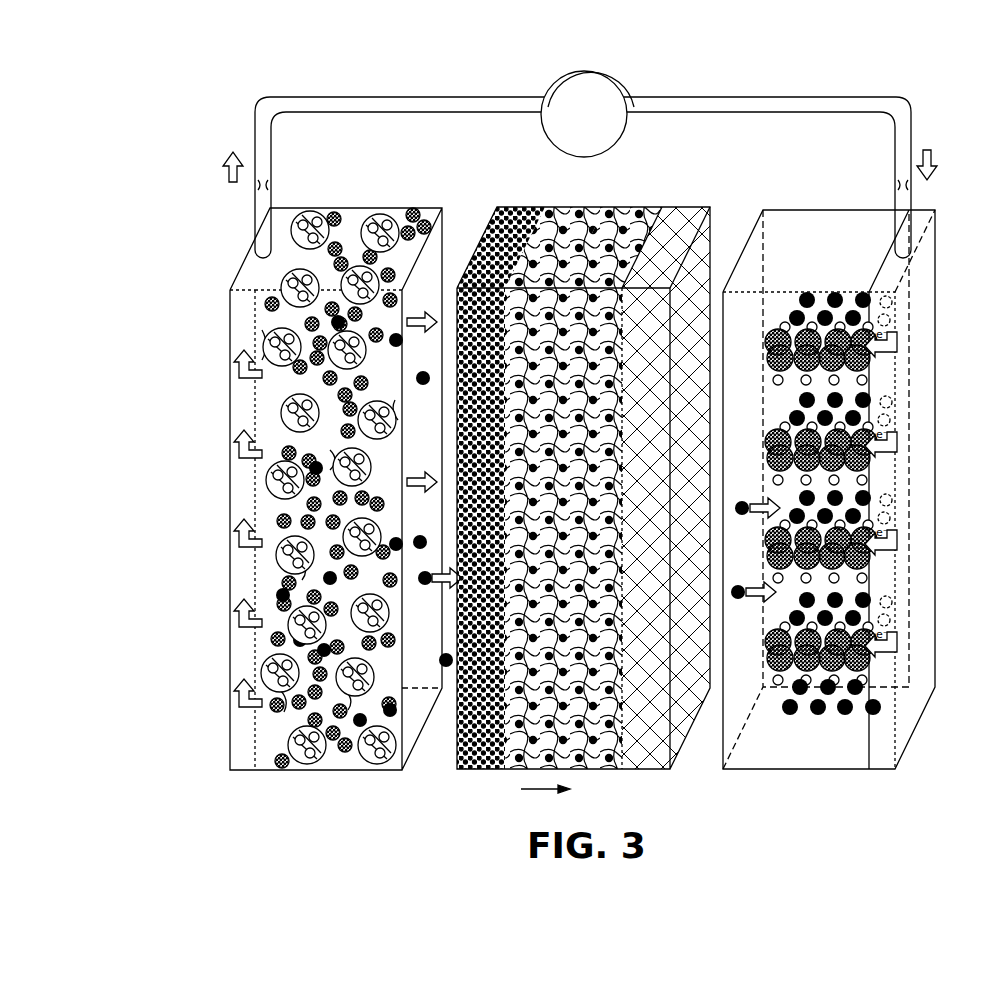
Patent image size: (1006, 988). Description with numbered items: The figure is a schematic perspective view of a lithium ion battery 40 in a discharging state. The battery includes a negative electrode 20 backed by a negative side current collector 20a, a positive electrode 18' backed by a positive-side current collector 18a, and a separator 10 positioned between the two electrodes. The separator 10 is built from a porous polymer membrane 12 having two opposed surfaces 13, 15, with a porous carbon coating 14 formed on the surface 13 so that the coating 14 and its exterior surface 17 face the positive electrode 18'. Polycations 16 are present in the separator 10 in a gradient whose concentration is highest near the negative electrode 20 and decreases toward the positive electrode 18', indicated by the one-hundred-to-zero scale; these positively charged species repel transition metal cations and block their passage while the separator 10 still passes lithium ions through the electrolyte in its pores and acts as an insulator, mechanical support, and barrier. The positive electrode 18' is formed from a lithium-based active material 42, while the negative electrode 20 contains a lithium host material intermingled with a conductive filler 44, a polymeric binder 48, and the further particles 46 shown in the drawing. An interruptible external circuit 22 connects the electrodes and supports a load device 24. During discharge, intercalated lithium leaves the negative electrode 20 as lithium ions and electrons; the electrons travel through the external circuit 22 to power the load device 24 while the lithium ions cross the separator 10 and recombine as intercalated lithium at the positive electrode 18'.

The lithium ion battery 40 is at (610, 130).
The external circuit 22 is at (457, 97).
The load device 24 is at (591, 55).
The negative electrode 20 is at (296, 507).
The negative side current collector 20a is at (243, 728).
The separator 10 is at (600, 465).
The surface of porous polymer membrane 15 is at (458, 250).
The polycation 16 is at (576, 218).
The porous polymer membrane 12 is at (606, 235).
The surface of porous polymer membrane 13 is at (640, 240).
The porous carbon coating 14 is at (676, 235).
The exterior surface of porous carbon coating 17 is at (700, 272).
The positive electrode 18' is at (863, 457).
The positive-side current collector 18a is at (885, 757).
The lithium-based active material 42 is at (872, 566).
The conductive filler 44 is at (362, 772).
The electrically conductive particles 46 is at (338, 772).
The polymeric binder 48 is at (289, 772).